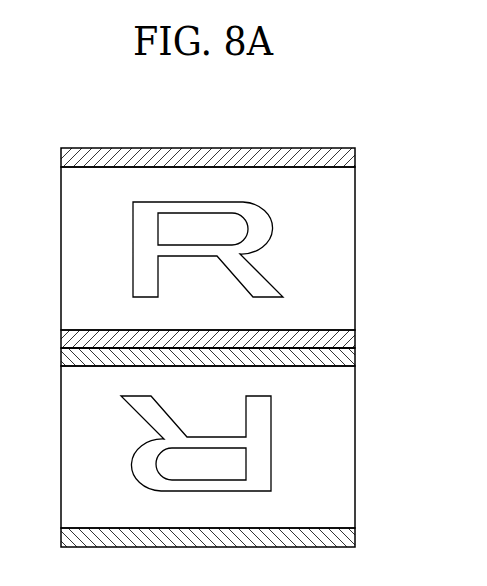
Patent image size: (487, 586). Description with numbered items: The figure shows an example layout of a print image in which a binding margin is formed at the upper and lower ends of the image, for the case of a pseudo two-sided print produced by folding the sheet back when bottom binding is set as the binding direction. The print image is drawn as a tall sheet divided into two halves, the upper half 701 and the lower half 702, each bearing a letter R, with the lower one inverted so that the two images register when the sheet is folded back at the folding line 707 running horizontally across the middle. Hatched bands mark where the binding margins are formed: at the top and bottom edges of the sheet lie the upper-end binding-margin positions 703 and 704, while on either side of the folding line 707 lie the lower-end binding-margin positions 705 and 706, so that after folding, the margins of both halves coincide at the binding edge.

The first substrate 701 is at (343, 238).
The second substrate 702 is at (343, 467).
The upper-end binding-margin position 703 is at (343, 161).
The upper-end binding-margin position 704 is at (343, 540).
The lower-end binding-margin position 705 is at (338, 337).
The lower-end binding-margin position 706 is at (337, 362).
The folding line 707 is at (352, 352).